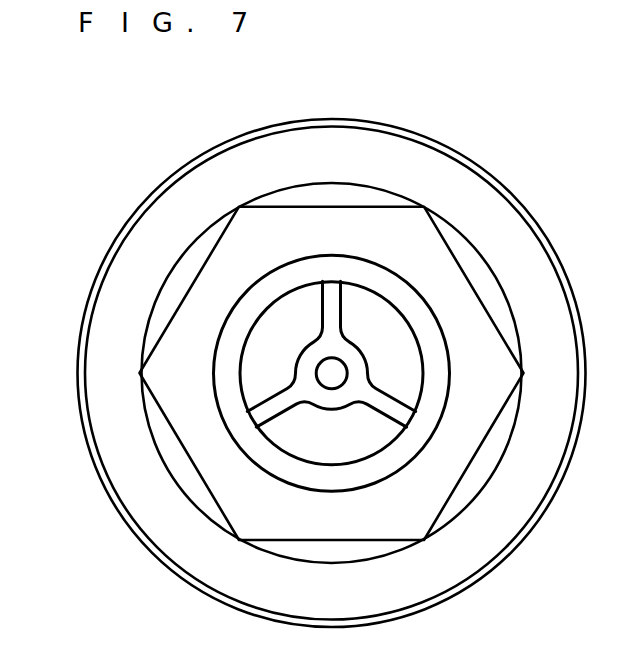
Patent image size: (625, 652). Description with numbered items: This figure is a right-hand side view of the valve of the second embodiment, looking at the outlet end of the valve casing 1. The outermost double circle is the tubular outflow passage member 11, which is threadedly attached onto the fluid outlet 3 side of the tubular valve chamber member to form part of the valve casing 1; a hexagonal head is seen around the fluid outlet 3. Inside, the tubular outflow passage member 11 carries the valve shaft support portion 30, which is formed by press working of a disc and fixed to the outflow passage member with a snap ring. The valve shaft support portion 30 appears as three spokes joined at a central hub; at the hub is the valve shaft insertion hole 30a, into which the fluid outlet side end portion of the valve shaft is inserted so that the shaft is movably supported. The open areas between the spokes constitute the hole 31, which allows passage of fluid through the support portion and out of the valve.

The valve casing 1 is at (447, 139).
The tubular outflow passage member 11 is at (477, 195).
The fluid outlet 3 is at (275, 324).
The hole 31 is at (268, 343).
The valve shaft support portion 30 is at (320, 348).
The valve shaft insertion hole 30a is at (330, 382).